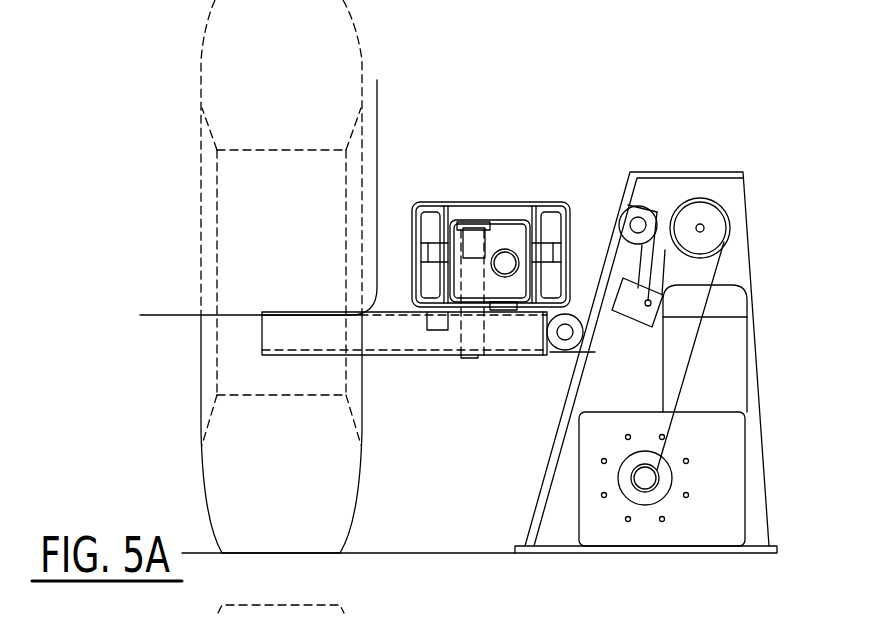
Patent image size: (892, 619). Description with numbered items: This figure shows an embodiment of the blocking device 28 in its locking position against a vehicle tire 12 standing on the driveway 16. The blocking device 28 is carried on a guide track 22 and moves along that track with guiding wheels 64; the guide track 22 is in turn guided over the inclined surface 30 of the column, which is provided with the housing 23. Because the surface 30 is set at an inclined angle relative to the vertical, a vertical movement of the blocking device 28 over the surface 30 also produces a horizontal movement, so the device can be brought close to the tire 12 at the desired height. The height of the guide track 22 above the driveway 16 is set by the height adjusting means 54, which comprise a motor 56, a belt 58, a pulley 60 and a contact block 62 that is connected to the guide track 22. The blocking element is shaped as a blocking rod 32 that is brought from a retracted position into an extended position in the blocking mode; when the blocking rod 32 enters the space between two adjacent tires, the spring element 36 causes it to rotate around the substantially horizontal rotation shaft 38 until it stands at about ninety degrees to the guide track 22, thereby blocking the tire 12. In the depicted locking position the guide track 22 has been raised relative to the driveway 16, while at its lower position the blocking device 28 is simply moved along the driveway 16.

The tire 12 is at (222, 62).
The driveway 16 is at (183, 545).
The guide track 22 is at (545, 203).
The housing 23 is at (733, 193).
The blocking device 28 is at (494, 244).
The inclined surface 30 is at (540, 505).
The blocking rod 32 is at (373, 345).
The spring element 36 is at (435, 322).
The rotation shaft 38 is at (472, 338).
The height adjusting means 54 is at (645, 295).
The motor 56 is at (660, 482).
The belt 58 is at (700, 348).
The pulley 60 is at (710, 231).
The contact block 62 is at (636, 312).
The guiding wheels 64 is at (432, 217).